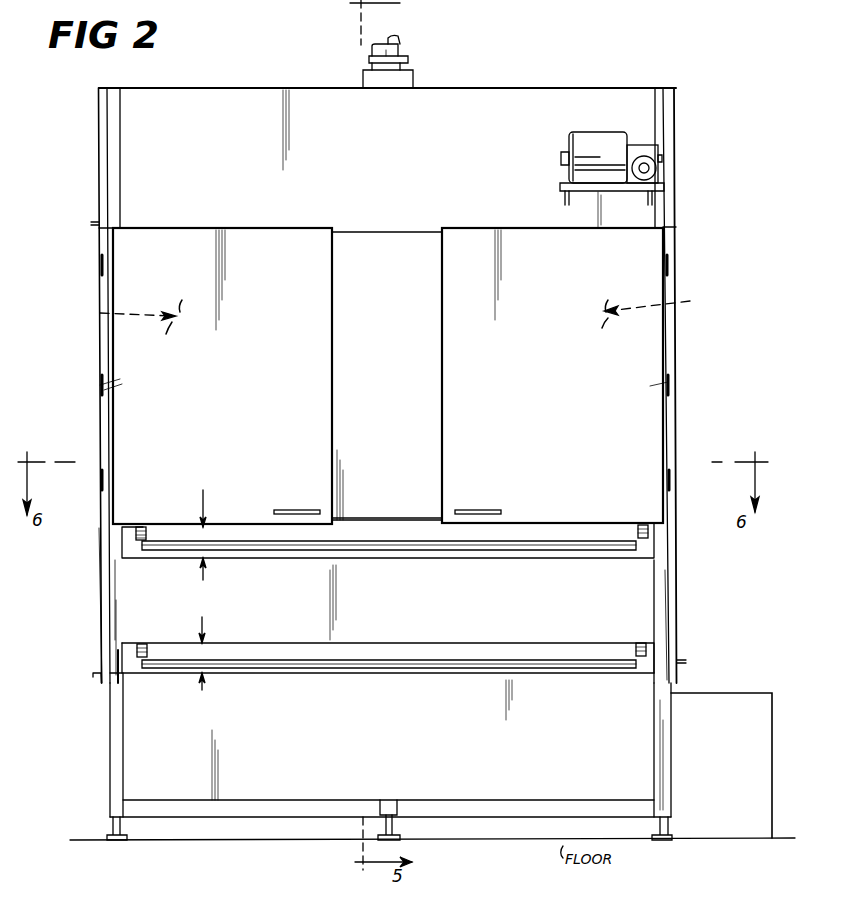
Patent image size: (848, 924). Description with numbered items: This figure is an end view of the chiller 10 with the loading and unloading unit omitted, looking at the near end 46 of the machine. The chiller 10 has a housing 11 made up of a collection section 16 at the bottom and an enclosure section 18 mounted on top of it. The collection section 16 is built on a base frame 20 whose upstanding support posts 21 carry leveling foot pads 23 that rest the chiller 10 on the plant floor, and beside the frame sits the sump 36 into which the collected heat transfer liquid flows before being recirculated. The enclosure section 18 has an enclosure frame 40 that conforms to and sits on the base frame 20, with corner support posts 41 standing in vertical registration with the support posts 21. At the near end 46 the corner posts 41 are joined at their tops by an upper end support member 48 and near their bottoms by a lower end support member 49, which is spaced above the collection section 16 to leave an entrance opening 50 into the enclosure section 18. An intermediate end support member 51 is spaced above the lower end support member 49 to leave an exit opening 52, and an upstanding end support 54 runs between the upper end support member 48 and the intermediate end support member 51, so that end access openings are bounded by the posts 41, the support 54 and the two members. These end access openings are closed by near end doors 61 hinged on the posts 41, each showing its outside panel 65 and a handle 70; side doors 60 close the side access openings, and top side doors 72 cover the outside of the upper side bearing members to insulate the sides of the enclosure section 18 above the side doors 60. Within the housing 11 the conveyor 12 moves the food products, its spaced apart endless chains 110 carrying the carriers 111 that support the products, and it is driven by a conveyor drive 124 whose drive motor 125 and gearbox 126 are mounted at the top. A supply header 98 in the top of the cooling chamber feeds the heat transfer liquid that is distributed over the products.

The chiller 10 is at (704, 72).
The housing 11 is at (95, 421).
The conveyor 12 is at (134, 539).
The collection section 16 is at (108, 750).
The enclosure section 18 is at (99, 237).
The base frame 20 is at (113, 800).
The support posts 21 is at (116, 772).
The leveling foot pads 23 is at (110, 836).
The sump 36 is at (750, 688).
The enclosure frame 40 is at (103, 598).
The corner support posts 41 is at (116, 618).
The near end 46 is at (566, 78).
The upper end support member 48 is at (470, 132).
The lower end support member 49 is at (493, 608).
The entrance opening 50 is at (391, 650).
The intermediate end support member 51 is at (373, 520).
The exit opening 52 is at (298, 552).
The upstanding end support 54 is at (403, 444).
The side doors 60 is at (103, 642).
The near end doors 61 is at (124, 378).
The outside panel 65 is at (246, 444).
The handle 70 is at (314, 512).
The top side doors 72 is at (102, 168).
The supply header 98 is at (402, 48).
The endless chains 110 is at (146, 524).
The carriers 111 is at (395, 547).
The conveyor drive 124 is at (610, 132).
The drive motor 125 is at (567, 140).
The gearbox 126 is at (638, 145).